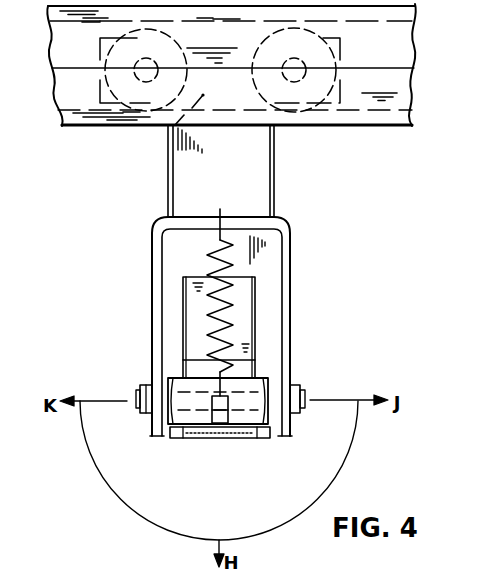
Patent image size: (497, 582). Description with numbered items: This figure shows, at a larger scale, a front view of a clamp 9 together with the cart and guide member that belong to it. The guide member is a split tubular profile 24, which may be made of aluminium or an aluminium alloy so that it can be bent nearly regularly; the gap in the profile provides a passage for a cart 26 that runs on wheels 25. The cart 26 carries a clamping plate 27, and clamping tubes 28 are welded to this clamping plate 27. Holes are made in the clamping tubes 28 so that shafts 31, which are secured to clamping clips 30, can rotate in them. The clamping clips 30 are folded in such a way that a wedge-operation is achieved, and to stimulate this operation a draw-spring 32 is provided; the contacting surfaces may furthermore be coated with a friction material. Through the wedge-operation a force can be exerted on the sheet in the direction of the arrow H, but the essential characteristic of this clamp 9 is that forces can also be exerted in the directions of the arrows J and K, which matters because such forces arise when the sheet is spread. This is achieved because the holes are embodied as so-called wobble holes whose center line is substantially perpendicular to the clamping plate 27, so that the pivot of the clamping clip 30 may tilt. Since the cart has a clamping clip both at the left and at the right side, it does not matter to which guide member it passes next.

The suspension unit 9 is at (240, 320).
The split tubular profile 24 is at (362, 81).
The wheels 25 is at (307, 88).
The cart 26 is at (160, 132).
The clamping plate 27 is at (260, 262).
The clamping tubes 28 is at (281, 233).
The clamping clip 30 is at (245, 328).
The shaft 31 is at (303, 392).
The draw-spring 32 is at (233, 294).